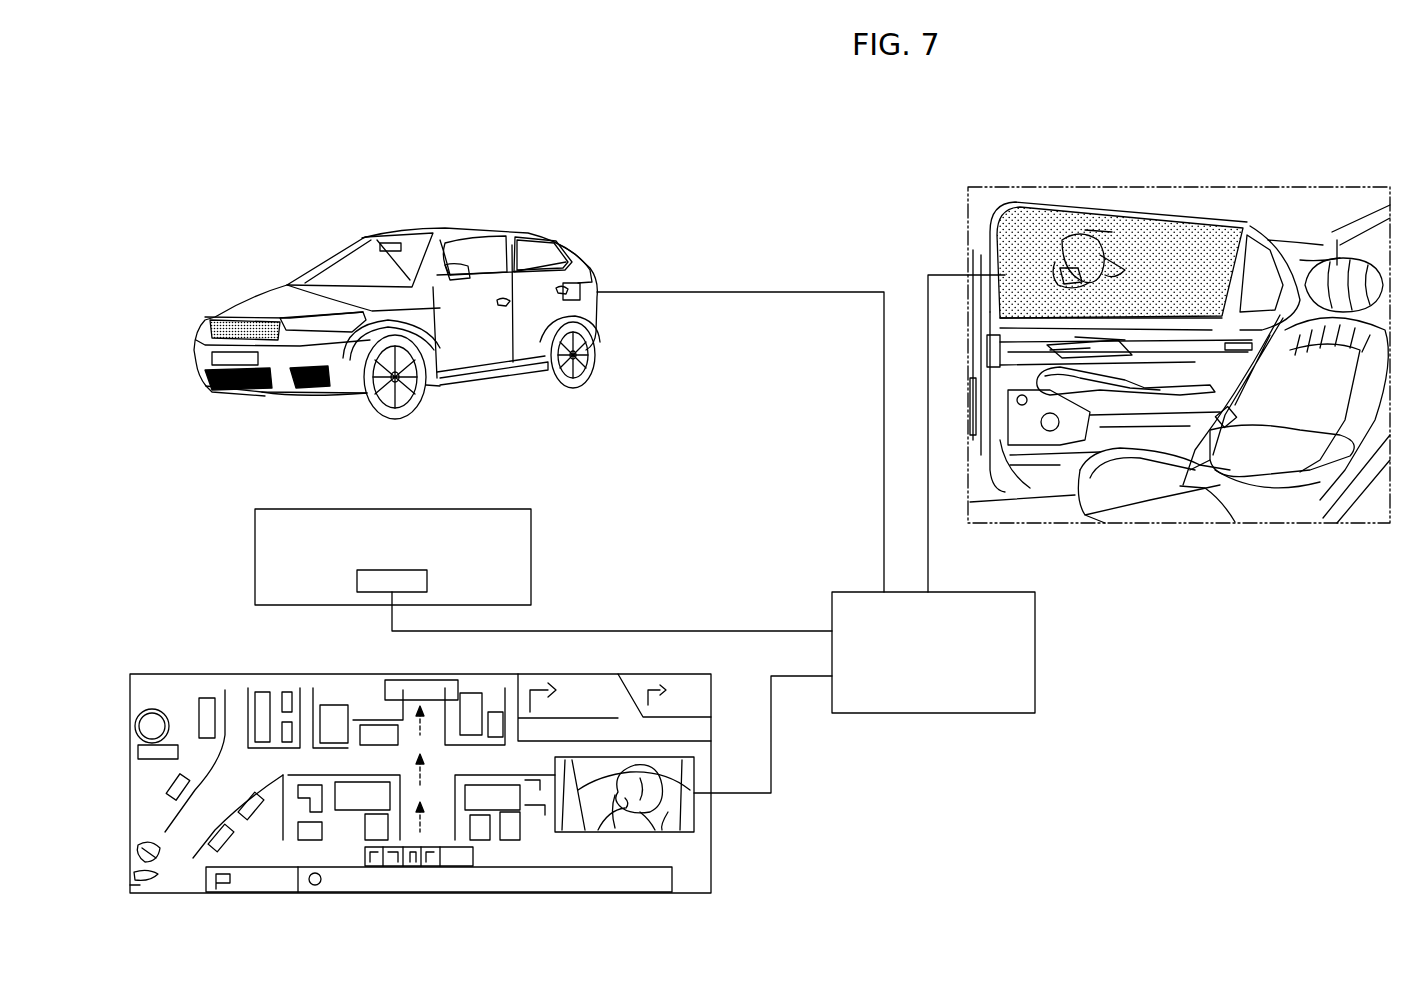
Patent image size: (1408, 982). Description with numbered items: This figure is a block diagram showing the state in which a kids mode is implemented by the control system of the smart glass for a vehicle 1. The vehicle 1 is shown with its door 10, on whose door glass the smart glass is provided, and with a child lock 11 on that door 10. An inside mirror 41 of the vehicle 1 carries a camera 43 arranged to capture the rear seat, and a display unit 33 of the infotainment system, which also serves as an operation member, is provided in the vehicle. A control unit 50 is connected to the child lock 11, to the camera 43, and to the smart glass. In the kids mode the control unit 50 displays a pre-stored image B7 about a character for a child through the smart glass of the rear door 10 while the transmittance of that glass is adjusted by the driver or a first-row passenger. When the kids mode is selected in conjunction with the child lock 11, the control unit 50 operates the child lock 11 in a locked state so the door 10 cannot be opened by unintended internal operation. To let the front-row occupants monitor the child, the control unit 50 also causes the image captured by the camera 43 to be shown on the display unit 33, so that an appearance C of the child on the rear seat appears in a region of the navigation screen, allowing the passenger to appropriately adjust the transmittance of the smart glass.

The vehicle 1 is at (591, 163).
The door 10 is at (530, 332).
The child lock 11 is at (578, 274).
The inside mirror 41 is at (386, 243).
The camera 43 is at (392, 570).
The display unit 33 is at (220, 672).
The control unit 50 is at (1010, 652).
The image about a character for child B7 is at (1088, 210).
The appearance of the child C is at (674, 832).